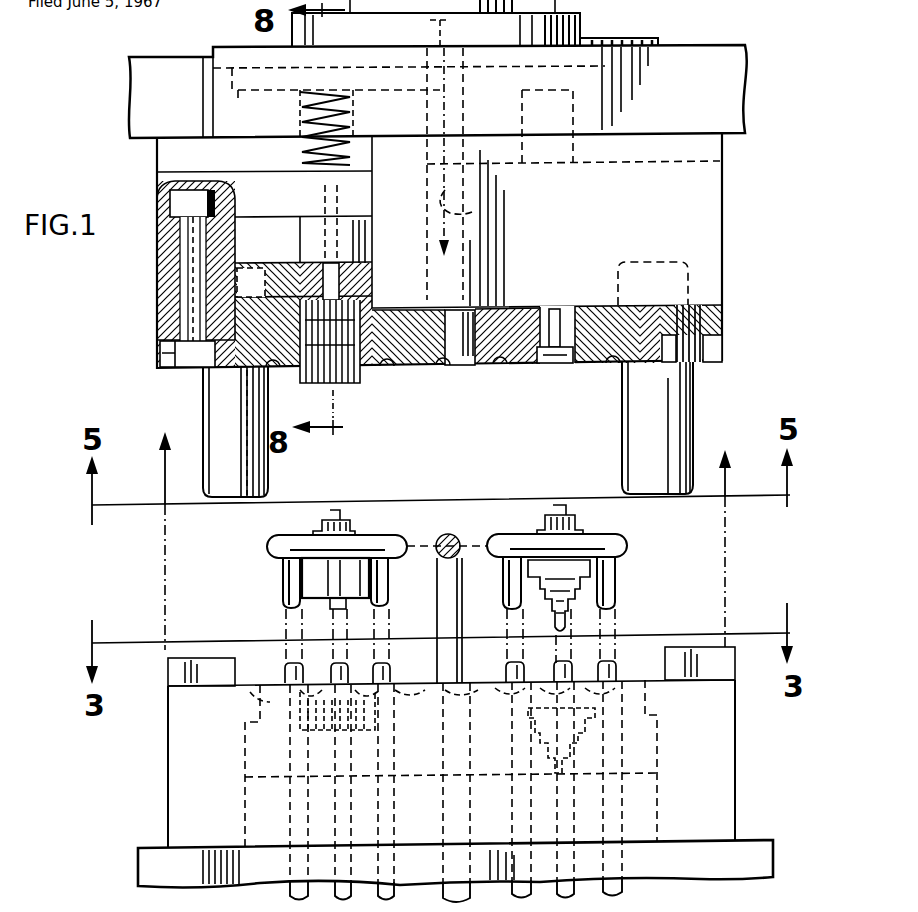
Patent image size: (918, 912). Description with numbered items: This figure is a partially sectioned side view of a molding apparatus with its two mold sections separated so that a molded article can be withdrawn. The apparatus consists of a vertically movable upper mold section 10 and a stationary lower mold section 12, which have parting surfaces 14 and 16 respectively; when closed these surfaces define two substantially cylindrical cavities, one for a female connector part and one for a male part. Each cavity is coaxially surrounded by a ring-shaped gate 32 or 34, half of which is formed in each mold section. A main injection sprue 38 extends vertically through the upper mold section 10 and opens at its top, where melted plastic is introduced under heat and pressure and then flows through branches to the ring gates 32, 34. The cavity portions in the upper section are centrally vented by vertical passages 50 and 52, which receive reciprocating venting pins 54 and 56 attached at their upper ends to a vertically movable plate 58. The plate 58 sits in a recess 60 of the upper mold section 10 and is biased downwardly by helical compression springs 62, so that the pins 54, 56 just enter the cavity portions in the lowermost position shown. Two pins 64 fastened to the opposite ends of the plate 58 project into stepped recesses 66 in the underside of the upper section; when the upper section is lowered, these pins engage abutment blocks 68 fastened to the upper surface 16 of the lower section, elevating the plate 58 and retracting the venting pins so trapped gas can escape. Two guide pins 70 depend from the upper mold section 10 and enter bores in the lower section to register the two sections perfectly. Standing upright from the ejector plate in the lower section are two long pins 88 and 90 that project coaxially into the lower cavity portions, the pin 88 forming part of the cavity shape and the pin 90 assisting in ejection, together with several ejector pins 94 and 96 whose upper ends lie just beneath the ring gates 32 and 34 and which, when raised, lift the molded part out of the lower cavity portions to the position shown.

The upper mold section 10 is at (728, 268).
The lower mold section 12 is at (738, 793).
The parting surface 14 is at (267, 390).
The parting surface 16 is at (258, 685).
The ring-shaped gate 32 is at (392, 370).
The ring-shaped gate 34 is at (500, 370).
The main injection sprue 38 is at (473, 198).
The vertical passage 50 is at (326, 260).
The vertical passage 52 is at (554, 310).
The venting pin 54 is at (320, 228).
The venting pin 56 is at (538, 309).
The vertically movable plate 58 is at (157, 193).
The recess 60 is at (165, 153).
The helical compression spring 62 is at (302, 150).
The pin 64 is at (190, 272).
The stepped recess 66 is at (162, 356).
The abutment block 68 is at (172, 678).
The guide pin 70 is at (268, 478).
The pin 88 is at (336, 605).
The pin 90 is at (566, 633).
The ejector pin 94 is at (283, 597).
The ejector pin 96 is at (618, 596).